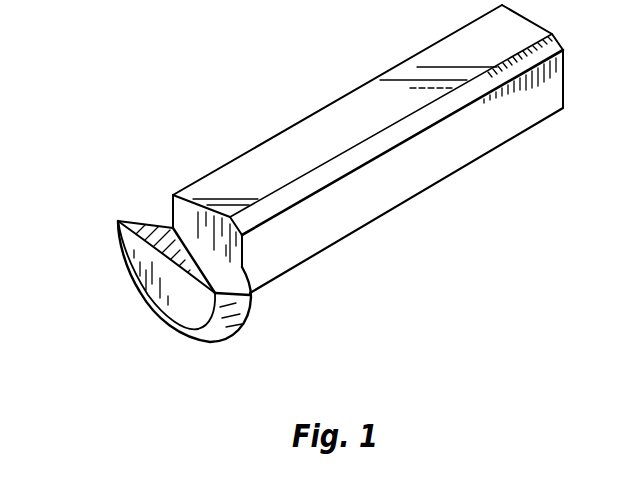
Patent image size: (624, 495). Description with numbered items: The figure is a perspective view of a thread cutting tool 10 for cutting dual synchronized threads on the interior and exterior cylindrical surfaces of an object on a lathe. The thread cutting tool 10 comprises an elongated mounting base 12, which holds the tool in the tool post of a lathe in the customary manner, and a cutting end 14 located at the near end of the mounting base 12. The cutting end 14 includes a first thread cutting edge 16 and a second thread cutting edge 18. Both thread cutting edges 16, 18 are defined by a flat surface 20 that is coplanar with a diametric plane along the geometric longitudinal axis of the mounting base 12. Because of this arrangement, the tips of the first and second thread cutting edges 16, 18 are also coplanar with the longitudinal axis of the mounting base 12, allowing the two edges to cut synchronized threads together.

The thread cutting tool 10 is at (147, 125).
The mounting base 12 is at (435, 162).
The cutting end 14 is at (185, 300).
The first thread cutting edge 16 is at (118, 219).
The second thread cutting edge 18 is at (252, 297).
The flat surface 20 is at (140, 238).